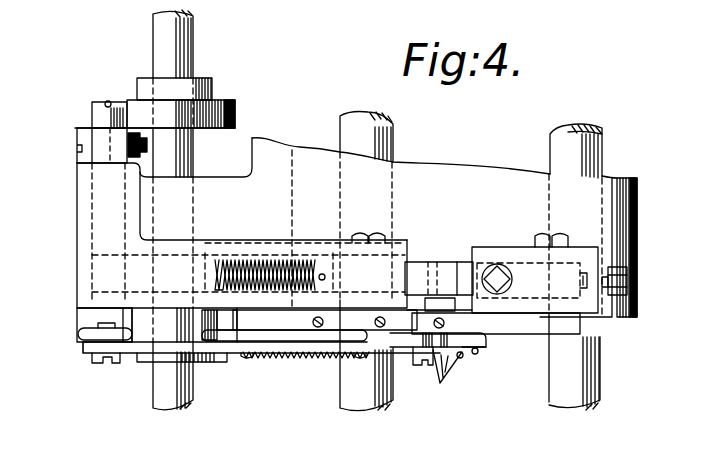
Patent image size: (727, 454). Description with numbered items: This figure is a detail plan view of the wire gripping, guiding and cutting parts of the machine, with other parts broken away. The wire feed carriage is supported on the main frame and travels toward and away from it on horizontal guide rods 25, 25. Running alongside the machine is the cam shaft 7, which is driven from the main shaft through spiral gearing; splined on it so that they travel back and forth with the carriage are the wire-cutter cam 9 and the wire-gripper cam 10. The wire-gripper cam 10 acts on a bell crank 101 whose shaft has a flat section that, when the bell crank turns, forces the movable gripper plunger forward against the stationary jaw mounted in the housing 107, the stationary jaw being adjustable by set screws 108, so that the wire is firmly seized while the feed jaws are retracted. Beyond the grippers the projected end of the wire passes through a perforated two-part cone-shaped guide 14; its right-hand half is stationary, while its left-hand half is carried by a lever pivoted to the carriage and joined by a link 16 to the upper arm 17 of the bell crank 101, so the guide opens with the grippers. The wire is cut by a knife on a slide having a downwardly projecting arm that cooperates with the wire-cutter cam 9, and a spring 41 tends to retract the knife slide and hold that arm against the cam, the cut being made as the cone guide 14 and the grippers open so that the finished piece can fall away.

The cam shaft 7 is at (193, 396).
The wire-cutter cam 9 is at (137, 356).
The wire-gripper cam 10 is at (233, 101).
The cone-shaped guide 14 is at (448, 372).
The link 16 is at (224, 348).
The upper arm 17 is at (95, 333).
The horizontal guide rods 25 is at (386, 393).
The spring 41 is at (283, 357).
The bell crank 101 is at (92, 222).
The housing 107 is at (505, 247).
The set screws 108 is at (615, 281).